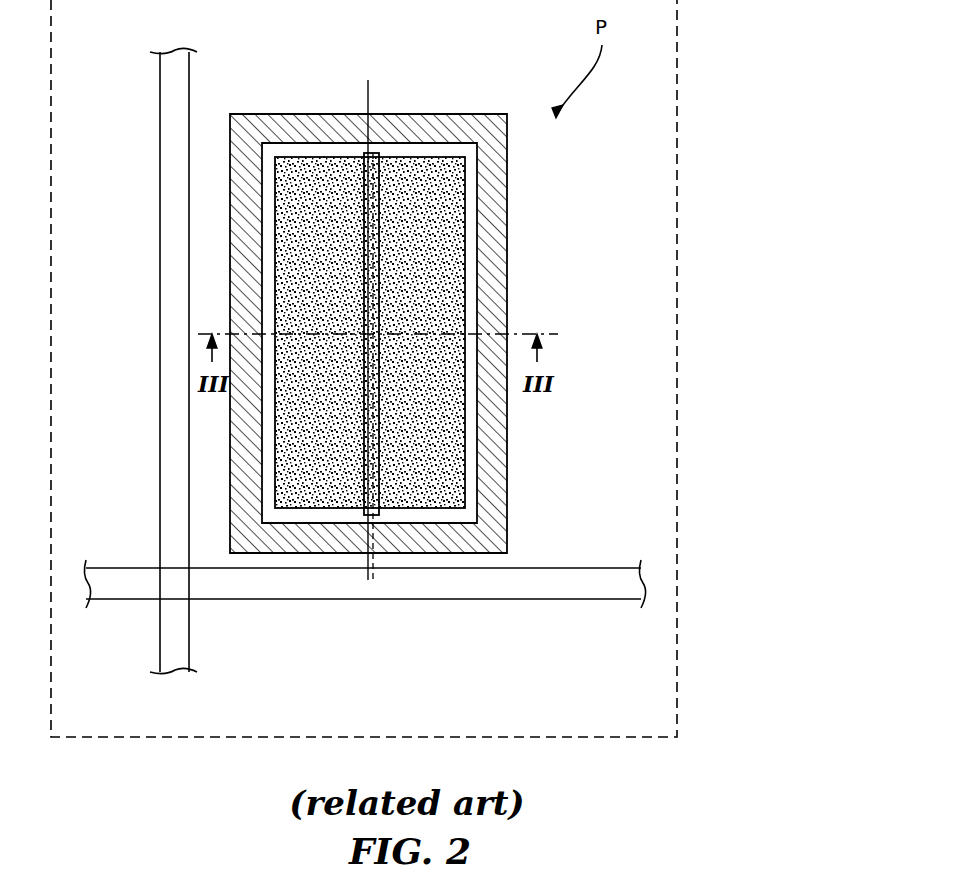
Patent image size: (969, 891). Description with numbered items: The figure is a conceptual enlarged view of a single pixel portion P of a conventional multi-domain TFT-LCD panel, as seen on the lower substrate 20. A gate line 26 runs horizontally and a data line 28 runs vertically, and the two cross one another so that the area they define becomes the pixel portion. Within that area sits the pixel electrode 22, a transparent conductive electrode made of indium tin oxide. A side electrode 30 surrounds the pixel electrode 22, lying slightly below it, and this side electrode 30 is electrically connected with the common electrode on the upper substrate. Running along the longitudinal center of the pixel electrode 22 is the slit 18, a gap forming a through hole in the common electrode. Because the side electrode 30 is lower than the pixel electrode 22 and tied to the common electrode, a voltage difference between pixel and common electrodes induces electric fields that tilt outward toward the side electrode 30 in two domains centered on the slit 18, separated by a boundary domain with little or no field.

The slit 18 is at (363, 545).
The lower substrate 20 is at (677, 64).
The pixel electrode 22 is at (305, 157).
The gate line 26 is at (545, 588).
The data line 28 is at (158, 488).
The side electrode 30 is at (508, 461).